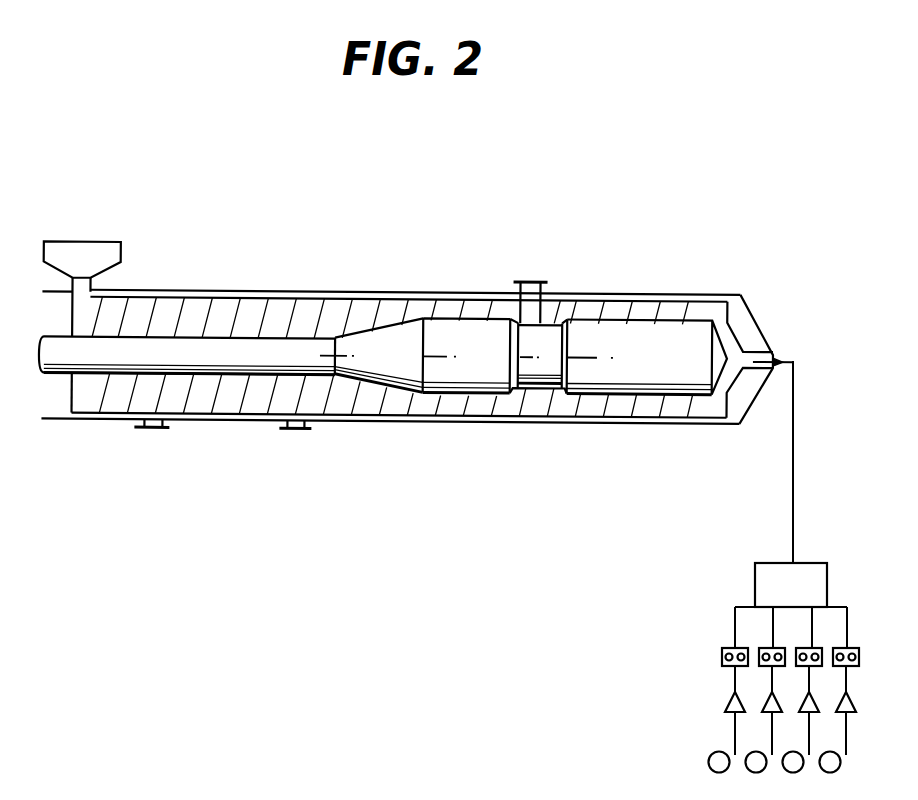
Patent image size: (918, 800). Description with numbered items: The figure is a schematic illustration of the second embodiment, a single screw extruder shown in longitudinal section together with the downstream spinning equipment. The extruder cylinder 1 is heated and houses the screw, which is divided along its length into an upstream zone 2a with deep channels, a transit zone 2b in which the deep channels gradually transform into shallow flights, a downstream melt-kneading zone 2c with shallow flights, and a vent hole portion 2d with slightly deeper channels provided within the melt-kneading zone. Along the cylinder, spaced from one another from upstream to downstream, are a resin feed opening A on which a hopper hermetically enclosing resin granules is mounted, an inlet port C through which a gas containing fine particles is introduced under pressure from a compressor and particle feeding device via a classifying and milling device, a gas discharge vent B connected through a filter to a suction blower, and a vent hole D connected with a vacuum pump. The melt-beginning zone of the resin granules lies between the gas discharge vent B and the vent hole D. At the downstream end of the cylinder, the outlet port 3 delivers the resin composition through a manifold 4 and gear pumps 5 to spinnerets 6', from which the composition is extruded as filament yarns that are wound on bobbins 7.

The extruder barrel 1 is at (175, 289).
The upstream zone 2a is at (228, 343).
The transit zone 2b is at (371, 340).
The downstream zone 2c is at (435, 330).
The vent hole portion 2d is at (547, 335).
The outlet port 3 is at (773, 352).
The manifold 4 is at (755, 580).
The gear pumps 5 is at (722, 657).
The spinnerets 6' is at (762, 720).
The bobbins 7 is at (708, 762).
The resin feed opening A is at (83, 262).
The gas discharge vent B is at (297, 419).
The inlet port C is at (153, 420).
The vent hole D is at (528, 256).